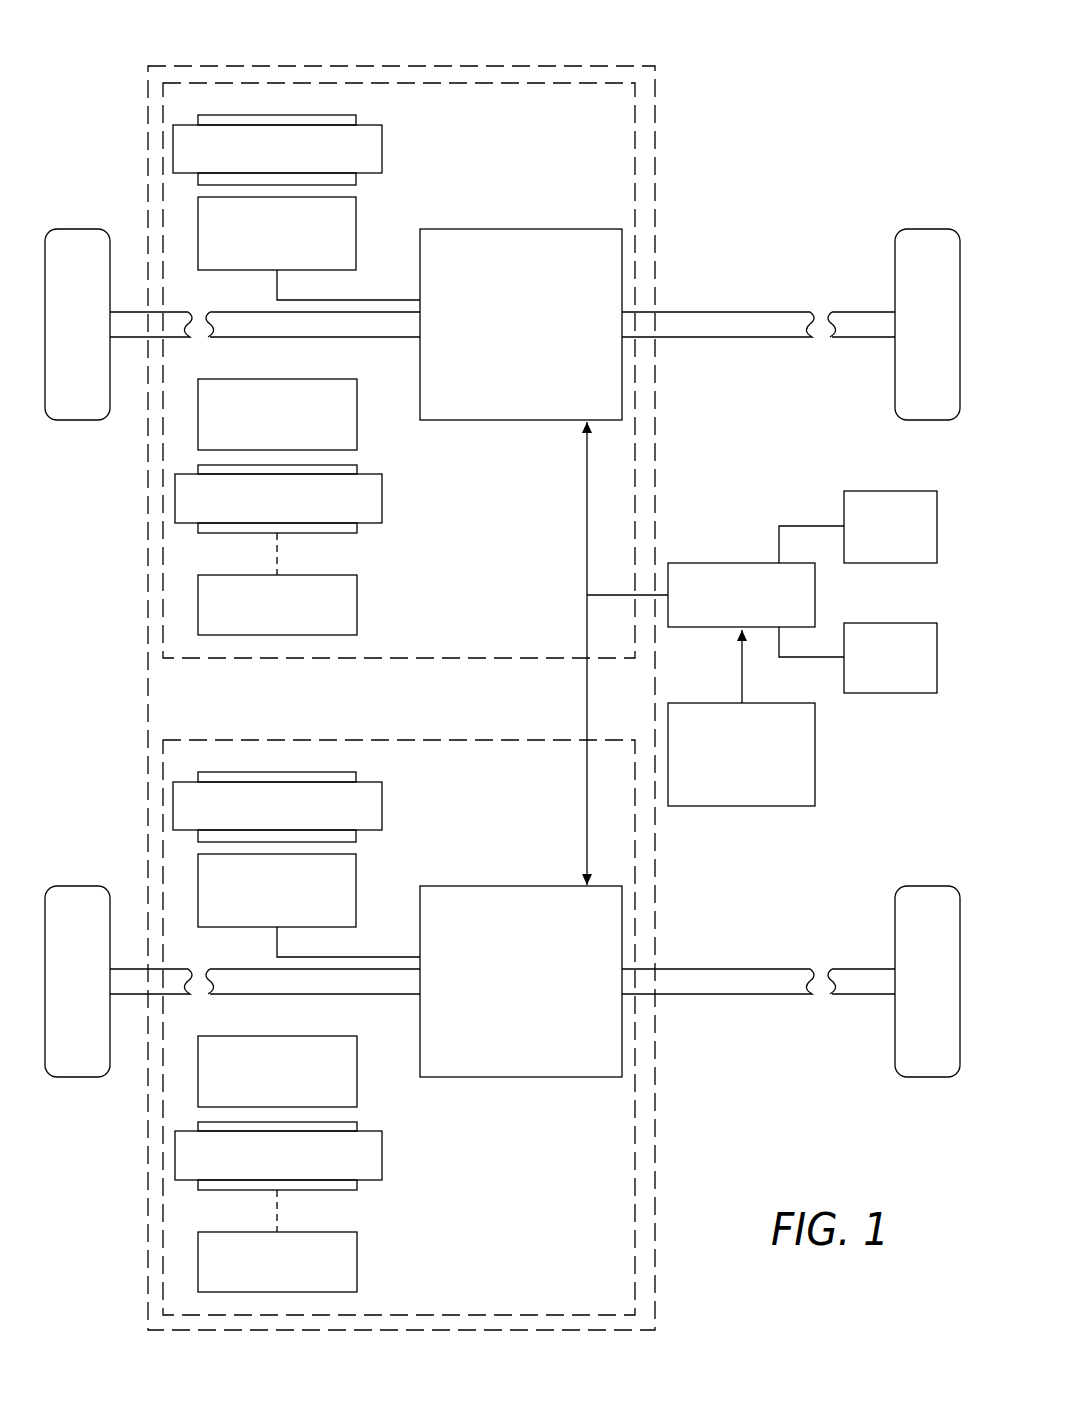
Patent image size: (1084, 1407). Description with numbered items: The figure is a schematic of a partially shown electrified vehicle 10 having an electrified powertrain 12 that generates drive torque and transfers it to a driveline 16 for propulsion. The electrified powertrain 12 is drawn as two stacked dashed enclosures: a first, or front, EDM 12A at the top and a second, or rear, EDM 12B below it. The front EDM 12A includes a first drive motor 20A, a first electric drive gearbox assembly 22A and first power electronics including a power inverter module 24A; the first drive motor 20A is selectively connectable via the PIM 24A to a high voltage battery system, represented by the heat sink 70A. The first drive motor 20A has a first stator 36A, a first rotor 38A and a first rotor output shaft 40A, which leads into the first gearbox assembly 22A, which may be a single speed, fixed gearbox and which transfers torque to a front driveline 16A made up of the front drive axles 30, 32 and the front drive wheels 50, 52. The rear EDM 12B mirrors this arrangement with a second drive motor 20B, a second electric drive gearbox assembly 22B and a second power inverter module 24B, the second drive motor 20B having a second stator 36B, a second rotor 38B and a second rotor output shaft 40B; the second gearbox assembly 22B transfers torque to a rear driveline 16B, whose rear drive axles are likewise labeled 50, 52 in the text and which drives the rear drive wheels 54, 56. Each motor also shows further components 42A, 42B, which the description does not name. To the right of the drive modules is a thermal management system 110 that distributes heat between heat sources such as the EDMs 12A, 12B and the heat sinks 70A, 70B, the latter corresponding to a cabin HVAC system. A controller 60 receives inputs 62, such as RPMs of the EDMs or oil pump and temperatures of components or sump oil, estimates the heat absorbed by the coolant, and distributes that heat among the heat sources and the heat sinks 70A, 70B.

The electrified vehicle 10 is at (715, 63).
The electrified powertrain 12 is at (496, 64).
The first EDM 12A is at (176, 48).
The second EDM 12B is at (181, 719).
The driveline 16 is at (498, 293).
The front driveline 16A is at (498, 293).
The rear driveline 16B is at (136, 977).
The first drive motor 20A is at (392, 184).
The second drive motor 20B is at (392, 841).
The first electric drive gearbox assembly 22A is at (534, 229).
The second electric drive gearbox assembly 22B is at (534, 886).
The power inverter module 24A is at (357, 615).
The power inverter module 24B is at (357, 1272).
The front drive axle 30 is at (136, 320).
The front drive axle 32 is at (773, 320).
The first stator 36A is at (258, 515).
The second stator 36B is at (258, 1172).
The first rotor 38A is at (258, 430).
The second rotor 38B is at (258, 1087).
The first rotor output shaft 40A is at (381, 301).
The second rotor output shaft 40B is at (381, 958).
The front clutch assembly 42A is at (348, 117).
The rear clutch assembly 42B is at (348, 774).
The front drive wheel 50 is at (57, 343).
The front drive wheel 52 is at (905, 343).
The rear drive wheel 54 is at (57, 1003).
The rear drive wheel 56 is at (905, 999).
The controller 60 is at (733, 563).
The inputs 62 is at (815, 778).
The heat sink 70A is at (905, 491).
The heat sink 70B is at (875, 694).
The thermal management system 110 is at (681, 461).